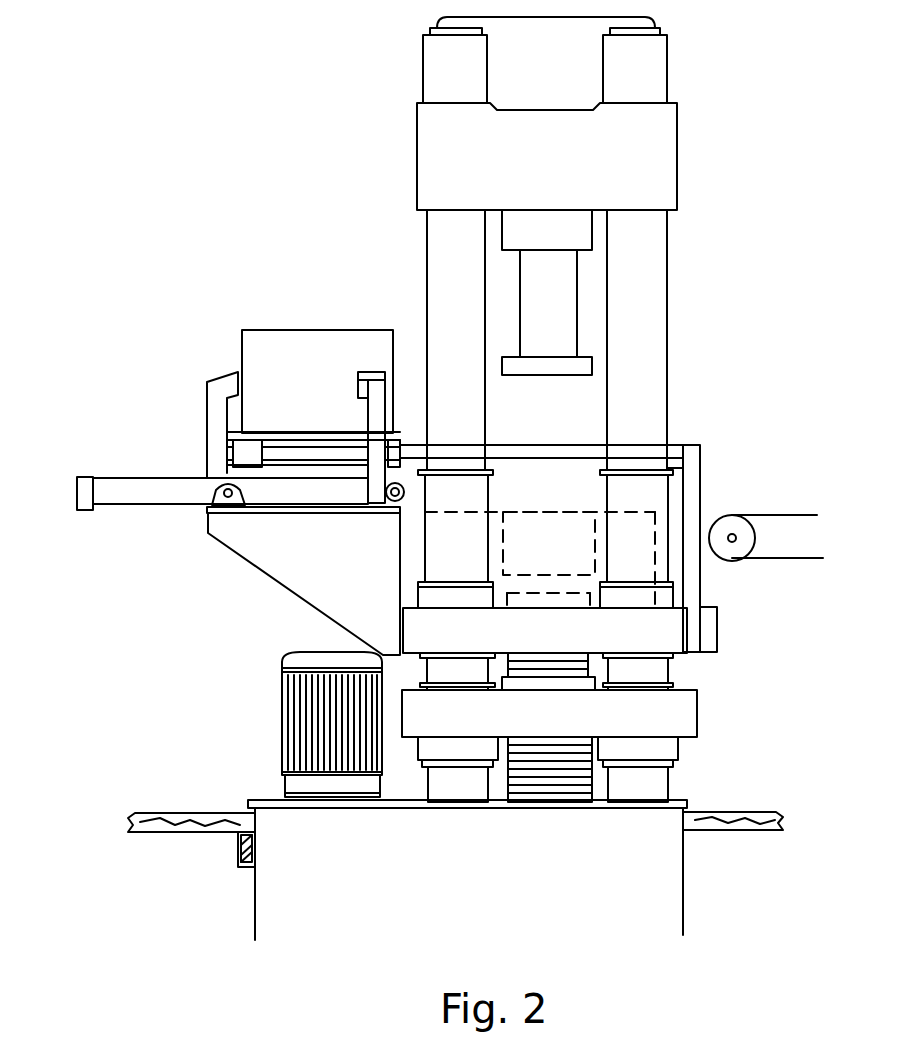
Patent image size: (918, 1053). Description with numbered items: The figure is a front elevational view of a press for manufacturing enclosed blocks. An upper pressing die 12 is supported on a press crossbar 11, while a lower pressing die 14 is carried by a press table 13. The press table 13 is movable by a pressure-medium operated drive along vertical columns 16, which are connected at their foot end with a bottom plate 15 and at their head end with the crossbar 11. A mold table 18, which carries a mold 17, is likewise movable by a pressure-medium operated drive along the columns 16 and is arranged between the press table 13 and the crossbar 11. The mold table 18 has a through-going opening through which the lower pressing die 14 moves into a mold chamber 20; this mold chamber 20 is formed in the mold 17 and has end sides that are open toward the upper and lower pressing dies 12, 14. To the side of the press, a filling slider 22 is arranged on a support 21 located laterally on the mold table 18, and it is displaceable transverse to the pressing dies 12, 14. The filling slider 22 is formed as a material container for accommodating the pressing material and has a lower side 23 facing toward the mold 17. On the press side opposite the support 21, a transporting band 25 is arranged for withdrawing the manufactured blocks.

The press crossbar 11 is at (536, 175).
The upper pressing die 12 is at (536, 328).
The press table 13 is at (541, 732).
The lower pressing die 14 is at (558, 600).
The bottom plate 15 is at (454, 870).
The columns 16 is at (441, 343).
The mold 17 is at (637, 538).
The mold table 18 is at (537, 643).
The mold chamber 20 is at (539, 563).
The support 21 is at (309, 577).
The filling slider 22 is at (282, 340).
The lower side 23 is at (273, 515).
The transporting band 25 is at (783, 513).